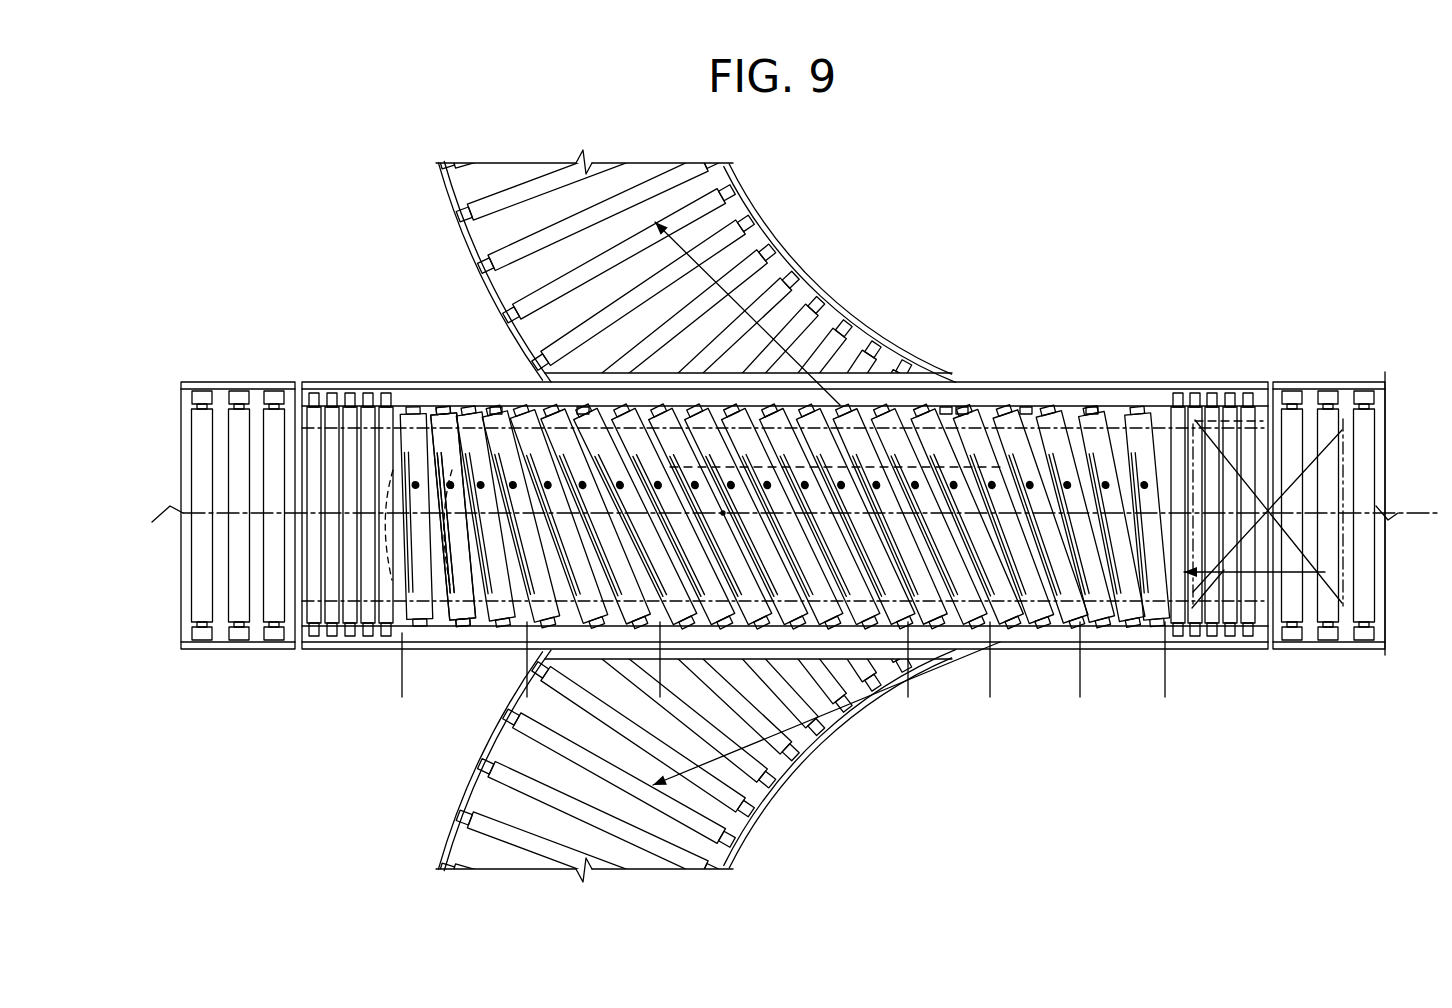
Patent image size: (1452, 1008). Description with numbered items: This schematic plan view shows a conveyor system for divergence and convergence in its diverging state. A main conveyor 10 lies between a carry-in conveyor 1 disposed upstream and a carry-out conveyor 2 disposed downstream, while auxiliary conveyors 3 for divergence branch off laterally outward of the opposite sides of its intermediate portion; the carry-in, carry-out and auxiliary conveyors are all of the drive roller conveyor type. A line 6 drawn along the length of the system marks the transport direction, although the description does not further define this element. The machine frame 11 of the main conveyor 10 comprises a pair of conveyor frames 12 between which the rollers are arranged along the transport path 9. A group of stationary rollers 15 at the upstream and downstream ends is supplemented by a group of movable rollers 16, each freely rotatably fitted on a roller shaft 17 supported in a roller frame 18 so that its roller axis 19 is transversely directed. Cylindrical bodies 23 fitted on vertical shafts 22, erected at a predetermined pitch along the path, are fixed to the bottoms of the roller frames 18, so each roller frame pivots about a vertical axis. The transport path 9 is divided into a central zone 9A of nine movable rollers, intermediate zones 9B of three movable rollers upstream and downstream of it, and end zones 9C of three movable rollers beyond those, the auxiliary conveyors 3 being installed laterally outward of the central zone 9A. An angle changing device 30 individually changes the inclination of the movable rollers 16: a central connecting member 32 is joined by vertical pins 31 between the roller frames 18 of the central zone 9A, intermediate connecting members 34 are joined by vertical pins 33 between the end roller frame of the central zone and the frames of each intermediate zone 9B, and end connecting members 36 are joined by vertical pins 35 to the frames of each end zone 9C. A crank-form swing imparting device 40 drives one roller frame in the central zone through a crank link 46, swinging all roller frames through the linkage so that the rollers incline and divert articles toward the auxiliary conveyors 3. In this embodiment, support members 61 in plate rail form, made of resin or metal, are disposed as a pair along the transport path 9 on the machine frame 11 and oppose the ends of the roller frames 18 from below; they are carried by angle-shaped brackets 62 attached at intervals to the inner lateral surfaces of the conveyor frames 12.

The carry-in conveyor 1 is at (1335, 376).
The carry-out conveyor 2 is at (232, 376).
The auxiliary conveyor 3 is at (767, 222).
The conveying path center line 6 is at (1347, 542).
The transport path 9 is at (783, 496).
The central zone 9A is at (990, 685).
The intermediate zone 9B is at (527, 685).
The end zone 9C is at (527, 685).
The main conveyor 10 is at (1105, 343).
The machine frame 11 is at (357, 655).
The conveyor frame 12 is at (1189, 377).
The stationary roller 15 is at (353, 577).
The movable roller 16 is at (443, 410).
The roller shaft 17 is at (1026, 398).
The roller frame 18 is at (962, 392).
The roller axis 19 is at (893, 622).
The vertical shaft 22 is at (401, 657).
The cylindrical body 23 is at (409, 657).
The angle changing device 30 is at (832, 330).
The vertical pin 31 is at (767, 487).
The central connecting member 32 is at (787, 500).
The vertical pin 33 is at (497, 398).
The intermediate connecting member 34 is at (582, 398).
The vertical pin 35 is at (1180, 497).
The end connecting member 36 is at (1167, 398).
The swing imparting device 40 is at (893, 388).
The crank link 46 is at (826, 503).
The support member 61 is at (829, 405).
The bracket 62 is at (306, 438).